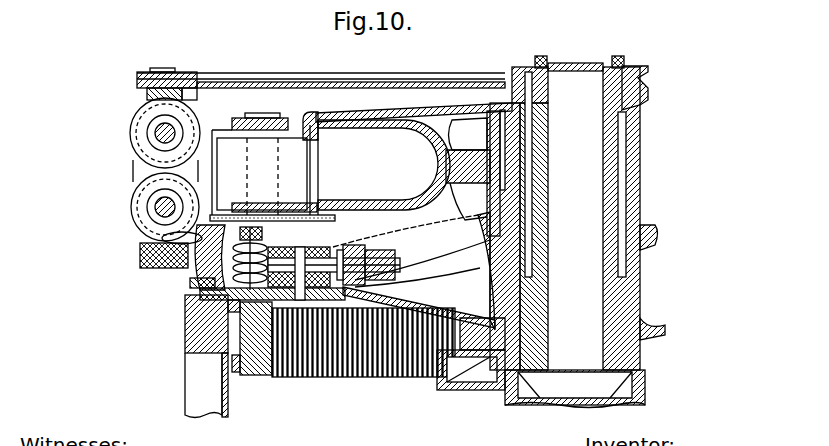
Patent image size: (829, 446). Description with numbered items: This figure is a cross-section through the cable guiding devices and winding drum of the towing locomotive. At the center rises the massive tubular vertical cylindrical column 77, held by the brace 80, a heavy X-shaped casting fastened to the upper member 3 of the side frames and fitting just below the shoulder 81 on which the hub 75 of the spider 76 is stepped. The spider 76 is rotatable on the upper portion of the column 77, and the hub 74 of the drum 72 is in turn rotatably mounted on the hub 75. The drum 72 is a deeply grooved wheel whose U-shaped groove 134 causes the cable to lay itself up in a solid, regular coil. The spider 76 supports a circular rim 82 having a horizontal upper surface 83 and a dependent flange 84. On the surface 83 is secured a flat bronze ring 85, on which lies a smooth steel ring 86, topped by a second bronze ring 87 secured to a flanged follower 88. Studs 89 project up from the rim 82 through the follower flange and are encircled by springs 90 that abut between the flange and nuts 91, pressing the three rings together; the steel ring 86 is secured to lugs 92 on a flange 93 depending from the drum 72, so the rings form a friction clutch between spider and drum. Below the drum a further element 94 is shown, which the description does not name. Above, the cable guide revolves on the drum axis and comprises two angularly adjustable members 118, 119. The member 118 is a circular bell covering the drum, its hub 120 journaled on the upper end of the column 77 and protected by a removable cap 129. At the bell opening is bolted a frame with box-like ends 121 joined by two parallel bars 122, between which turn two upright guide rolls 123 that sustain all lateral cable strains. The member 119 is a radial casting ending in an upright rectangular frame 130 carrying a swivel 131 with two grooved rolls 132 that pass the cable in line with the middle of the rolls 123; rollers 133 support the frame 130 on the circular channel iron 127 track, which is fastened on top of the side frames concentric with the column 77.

The upper member of the side frames 3 is at (187, 340).
The drum 72 is at (436, 211).
The hub of the drum 74 is at (486, 153).
The hub of the spider 75 is at (512, 285).
The spider 76 is at (432, 312).
The column 77 is at (547, 333).
The brace 80 is at (465, 388).
The shoulder 81 is at (645, 365).
The circular rim 82 is at (240, 307).
The horizontal upper surface 83 is at (352, 262).
The dependent flange 84 is at (242, 372).
The bronze ring 85 is at (363, 286).
The steel ring 86 is at (352, 250).
The second bronze ring 87 is at (310, 248).
The flanged follower 88 is at (300, 229).
The studs 89 is at (240, 312).
The springs 90 is at (200, 287).
The nuts 91 is at (238, 228).
The lugs 92 is at (372, 282).
The flange 93 is at (408, 238).
The fins 94 is at (290, 380).
The guide member 118 is at (440, 113).
The guide member 119 is at (340, 75).
The hub of the bell 120 is at (636, 101).
The box-like ends 121 is at (297, 118).
The parallel bars 122 is at (242, 120).
The guide rolls 123 is at (302, 168).
The channel iron 127 is at (150, 243).
The cap 129 is at (558, 63).
The rectangular frame 130 is at (196, 97).
The swivel 131 is at (140, 93).
The grooved rolls 132 is at (130, 131).
The rollers 133 is at (200, 283).
The groove 134 is at (445, 166).